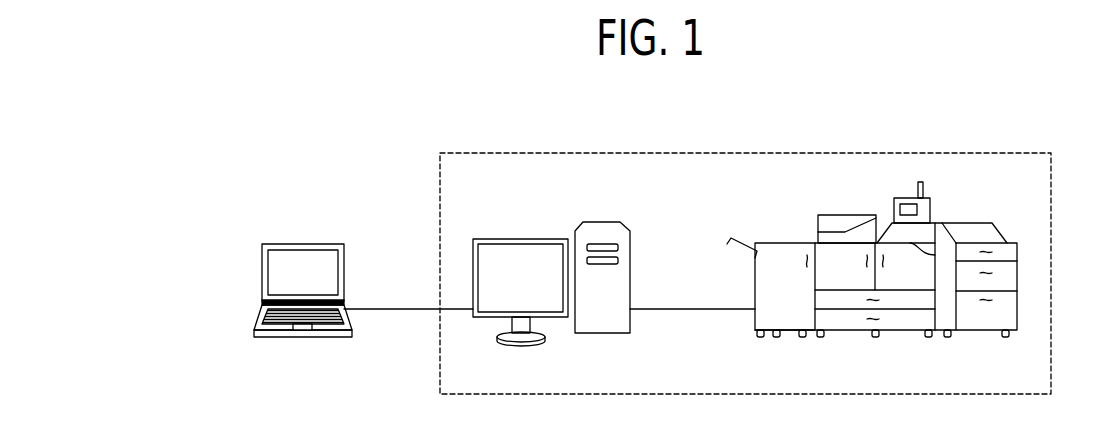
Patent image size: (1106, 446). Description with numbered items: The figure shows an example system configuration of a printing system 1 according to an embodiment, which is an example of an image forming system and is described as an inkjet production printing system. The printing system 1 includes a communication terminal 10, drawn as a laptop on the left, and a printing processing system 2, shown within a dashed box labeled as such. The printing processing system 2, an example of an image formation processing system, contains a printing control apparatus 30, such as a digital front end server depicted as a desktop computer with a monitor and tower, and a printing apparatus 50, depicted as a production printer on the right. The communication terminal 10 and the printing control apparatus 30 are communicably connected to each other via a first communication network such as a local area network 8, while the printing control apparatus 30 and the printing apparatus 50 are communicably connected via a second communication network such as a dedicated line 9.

The printing system 1 is at (378, 127).
The printing processing system 2 is at (657, 151).
The local area network 8 is at (393, 311).
The dedicated line 9 is at (692, 311).
The communication terminal 10 is at (298, 338).
The printing control apparatus 30 is at (600, 336).
The printing apparatus 50 is at (975, 333).